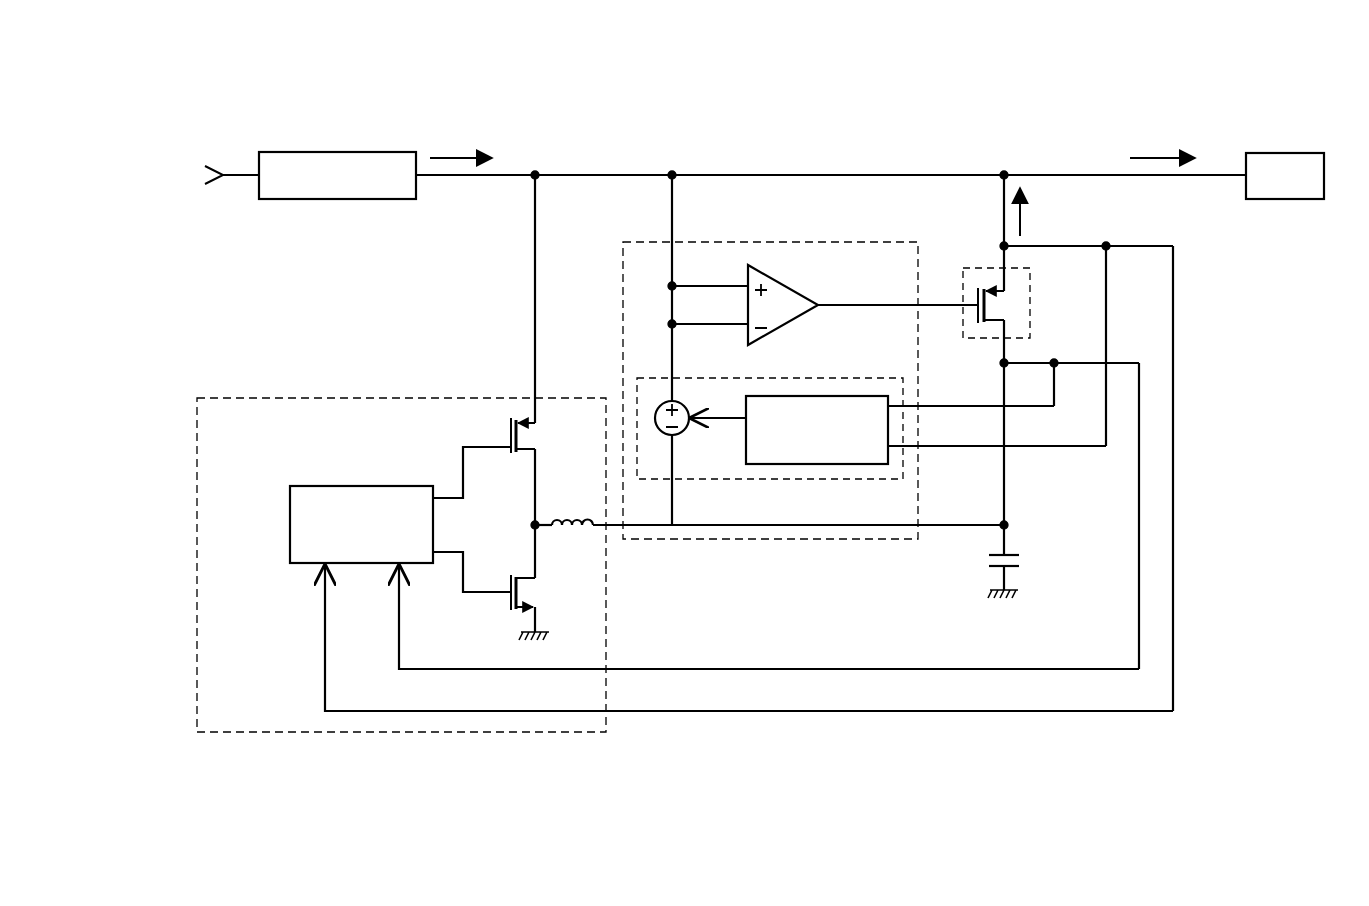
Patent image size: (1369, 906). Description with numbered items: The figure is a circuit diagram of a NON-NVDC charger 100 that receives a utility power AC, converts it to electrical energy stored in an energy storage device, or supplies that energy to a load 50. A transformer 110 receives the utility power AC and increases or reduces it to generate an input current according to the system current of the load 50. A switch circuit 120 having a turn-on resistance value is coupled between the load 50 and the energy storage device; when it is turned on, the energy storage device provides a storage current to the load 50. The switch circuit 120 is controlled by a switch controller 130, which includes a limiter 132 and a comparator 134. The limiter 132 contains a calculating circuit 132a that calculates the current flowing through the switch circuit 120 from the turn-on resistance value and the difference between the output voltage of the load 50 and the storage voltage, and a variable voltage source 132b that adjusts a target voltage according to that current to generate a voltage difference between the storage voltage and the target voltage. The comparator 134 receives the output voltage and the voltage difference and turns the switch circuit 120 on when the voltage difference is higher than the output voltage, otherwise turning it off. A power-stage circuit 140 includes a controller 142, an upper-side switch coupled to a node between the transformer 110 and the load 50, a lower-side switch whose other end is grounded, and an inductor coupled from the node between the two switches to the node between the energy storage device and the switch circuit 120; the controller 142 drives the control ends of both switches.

The NON-NVDC charger 100 is at (122, 49).
The transformer 110 is at (337, 152).
The load 50 is at (1285, 153).
The switch circuit 120 is at (975, 268).
The switch controller 130 is at (777, 242).
The comparator 134 is at (800, 292).
The limiter 132 is at (880, 378).
The calculating circuit 132a is at (820, 396).
The variable voltage source 132b is at (678, 436).
The power-stage circuit 140 is at (402, 398).
The controller 142 is at (290, 522).